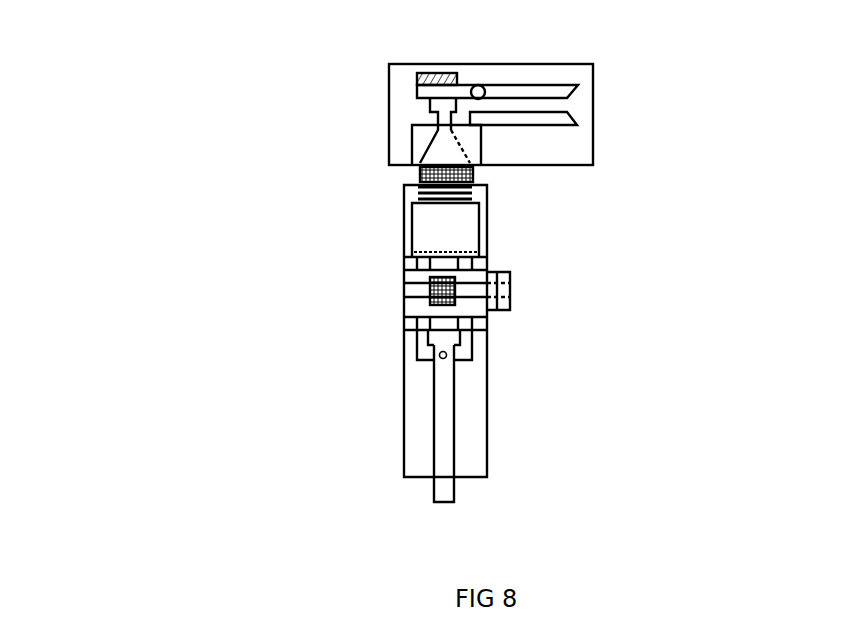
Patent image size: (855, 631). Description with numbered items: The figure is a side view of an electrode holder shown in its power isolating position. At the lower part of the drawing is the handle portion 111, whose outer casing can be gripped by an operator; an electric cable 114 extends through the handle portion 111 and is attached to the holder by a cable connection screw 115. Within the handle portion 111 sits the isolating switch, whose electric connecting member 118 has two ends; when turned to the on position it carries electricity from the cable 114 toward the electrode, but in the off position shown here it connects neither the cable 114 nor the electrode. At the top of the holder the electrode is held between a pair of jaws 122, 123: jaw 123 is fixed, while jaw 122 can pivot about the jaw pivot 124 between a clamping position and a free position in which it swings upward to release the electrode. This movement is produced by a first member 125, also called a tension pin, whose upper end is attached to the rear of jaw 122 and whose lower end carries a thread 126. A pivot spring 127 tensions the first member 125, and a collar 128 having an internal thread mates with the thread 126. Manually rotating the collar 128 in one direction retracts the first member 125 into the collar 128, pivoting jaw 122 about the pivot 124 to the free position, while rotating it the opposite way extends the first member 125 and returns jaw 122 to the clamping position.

The handle portion 111 is at (377, 395).
The electric cable 114 is at (447, 443).
The cable connection screw 115 is at (443, 358).
The electric connecting member 118 is at (427, 292).
The jaw 122 is at (543, 88).
The jaw 123 is at (545, 117).
The jaw pivot 124 is at (477, 86).
The first member 125 is at (437, 148).
The thread 126 is at (433, 190).
The pivot spring 127 is at (435, 72).
The collar 128 is at (418, 230).